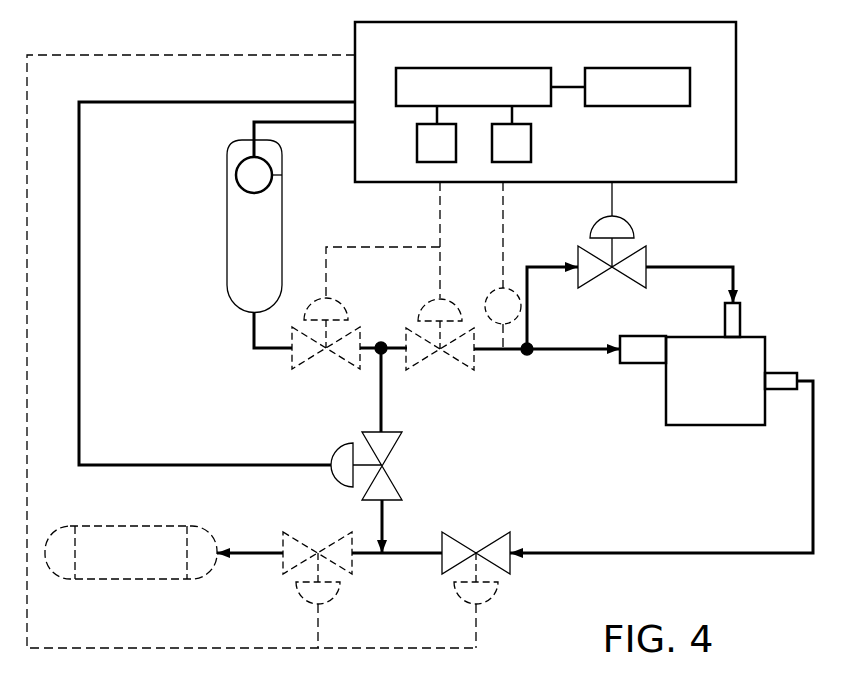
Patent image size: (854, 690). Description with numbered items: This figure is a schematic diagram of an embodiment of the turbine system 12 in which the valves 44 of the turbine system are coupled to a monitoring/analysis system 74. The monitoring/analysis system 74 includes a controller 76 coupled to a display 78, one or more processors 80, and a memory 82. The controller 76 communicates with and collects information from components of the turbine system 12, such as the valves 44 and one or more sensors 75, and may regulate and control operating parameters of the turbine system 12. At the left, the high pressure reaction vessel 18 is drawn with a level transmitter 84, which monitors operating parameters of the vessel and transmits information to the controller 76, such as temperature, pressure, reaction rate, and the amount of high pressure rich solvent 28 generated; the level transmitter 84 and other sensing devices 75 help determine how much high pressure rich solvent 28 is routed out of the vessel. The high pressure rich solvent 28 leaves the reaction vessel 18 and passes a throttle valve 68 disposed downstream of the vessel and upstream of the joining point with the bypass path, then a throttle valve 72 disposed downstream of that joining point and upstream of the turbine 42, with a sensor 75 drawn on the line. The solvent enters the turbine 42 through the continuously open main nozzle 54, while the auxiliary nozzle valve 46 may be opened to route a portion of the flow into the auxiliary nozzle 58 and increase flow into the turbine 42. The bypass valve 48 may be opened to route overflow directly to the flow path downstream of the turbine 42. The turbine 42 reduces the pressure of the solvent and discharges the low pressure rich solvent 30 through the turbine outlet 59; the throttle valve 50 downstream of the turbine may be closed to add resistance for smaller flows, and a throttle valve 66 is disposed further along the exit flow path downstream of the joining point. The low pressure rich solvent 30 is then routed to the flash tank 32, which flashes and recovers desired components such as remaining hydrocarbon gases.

The turbine system 12 is at (767, 225).
The high pressure reaction vessel 18 is at (282, 222).
The high pressure rich solvent 28 is at (270, 352).
The low pressure rich solvent 30 is at (813, 458).
The flash tank 32 is at (130, 580).
The turbine 42 is at (765, 357).
The valves 44 is at (338, 415).
The auxiliary nozzle valve 46 is at (640, 285).
The bypass valve 48 is at (390, 478).
The throttle valve 50 is at (490, 540).
The main nozzle 54 is at (656, 365).
The auxiliary nozzle 58 is at (740, 322).
The turbine outlet 59 is at (780, 390).
The throttle valve 66 is at (300, 533).
The throttle valve 68 is at (310, 372).
The throttle valve 72 is at (455, 360).
The monitoring/analysis system 74 is at (736, 98).
The sensors 75 is at (490, 293).
The controller 76 is at (396, 80).
The display 78 is at (640, 106).
The processors 80 is at (417, 143).
The memory 82 is at (531, 143).
The level transmitter 84 is at (250, 193).